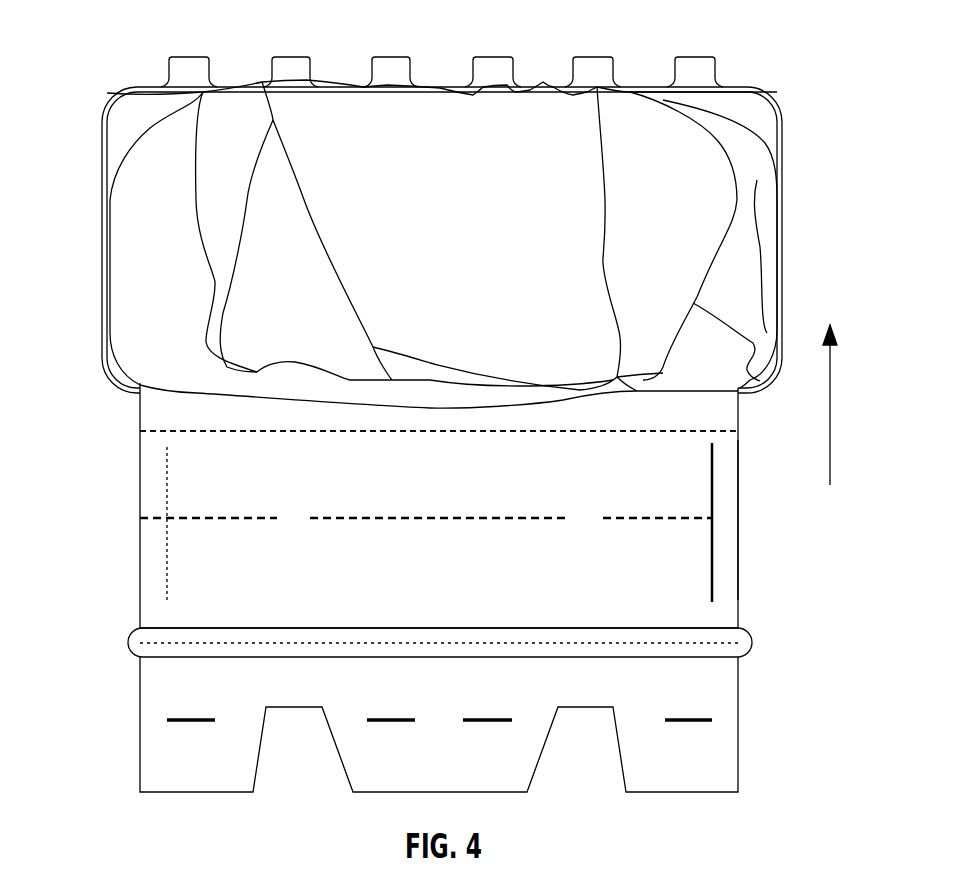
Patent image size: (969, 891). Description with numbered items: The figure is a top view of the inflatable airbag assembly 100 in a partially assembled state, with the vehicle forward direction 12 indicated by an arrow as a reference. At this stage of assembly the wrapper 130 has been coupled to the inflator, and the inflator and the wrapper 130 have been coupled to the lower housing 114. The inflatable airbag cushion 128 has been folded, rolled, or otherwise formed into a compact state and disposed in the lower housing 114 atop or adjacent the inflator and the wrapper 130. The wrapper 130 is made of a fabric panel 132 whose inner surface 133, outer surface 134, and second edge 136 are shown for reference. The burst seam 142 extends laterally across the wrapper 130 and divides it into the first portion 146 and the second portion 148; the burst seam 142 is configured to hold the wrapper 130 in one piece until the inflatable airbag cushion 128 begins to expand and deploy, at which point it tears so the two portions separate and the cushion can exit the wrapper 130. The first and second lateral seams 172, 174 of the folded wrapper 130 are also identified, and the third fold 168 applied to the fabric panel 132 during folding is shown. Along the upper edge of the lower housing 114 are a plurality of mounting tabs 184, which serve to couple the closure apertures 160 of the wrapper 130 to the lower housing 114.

The vehicle forward direction 12 is at (832, 377).
The inflatable airbag assembly 100 is at (120, 62).
The lower housing 114 is at (110, 100).
The inflatable airbag cushion 128 is at (430, 234).
The wrapper 130 is at (235, 491).
The fabric panel 132 is at (235, 564).
The inner surface 133 is at (725, 465).
The outer surface 134 is at (725, 557).
The second edge 136 is at (286, 628).
The burst seam 142 is at (377, 515).
The first portion 146 is at (442, 589).
The second portion 148 is at (480, 499).
The closure apertures 160 is at (192, 722).
The third fold 168 is at (663, 793).
The first lateral seam 172 is at (547, 433).
The second lateral seam 174 is at (547, 645).
The mounting tabs 184 is at (390, 55).